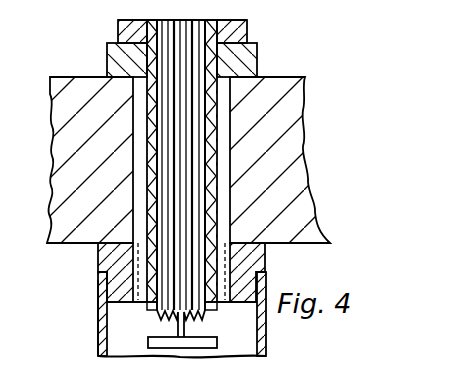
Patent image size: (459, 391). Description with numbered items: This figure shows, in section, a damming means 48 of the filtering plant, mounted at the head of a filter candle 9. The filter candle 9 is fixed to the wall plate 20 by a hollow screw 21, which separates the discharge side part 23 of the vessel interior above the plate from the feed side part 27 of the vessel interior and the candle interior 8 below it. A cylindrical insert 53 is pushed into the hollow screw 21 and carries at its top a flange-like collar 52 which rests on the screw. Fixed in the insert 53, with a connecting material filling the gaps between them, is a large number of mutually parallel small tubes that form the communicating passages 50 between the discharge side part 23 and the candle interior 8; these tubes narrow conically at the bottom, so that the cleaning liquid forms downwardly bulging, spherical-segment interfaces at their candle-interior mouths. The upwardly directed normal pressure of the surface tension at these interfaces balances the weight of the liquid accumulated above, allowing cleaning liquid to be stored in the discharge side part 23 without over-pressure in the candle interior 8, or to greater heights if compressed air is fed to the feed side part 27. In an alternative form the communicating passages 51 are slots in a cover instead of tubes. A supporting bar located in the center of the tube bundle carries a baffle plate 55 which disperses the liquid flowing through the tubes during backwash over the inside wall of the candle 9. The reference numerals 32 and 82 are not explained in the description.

The wall plate 20 is at (70, 138).
The discharge side part of the vessel interior 23 is at (76, 72).
The feed side part of the vessel interior 27 is at (73, 270).
The hollow screw 21 is at (245, 70).
The flange-like collar 52 is at (133, 33).
The damming means 48 is at (247, 21).
The communicating passages 50 is at (208, 21).
The cylindrical insert 53 is at (210, 60).
The rod 32 is at (178, 168).
The communicating passages 51 is at (132, 10).
The cap portion 82 is at (218, 10).
The candle interior 8 is at (127, 317).
The filter candle 9 is at (100, 332).
The baffle plate 55 is at (147, 343).